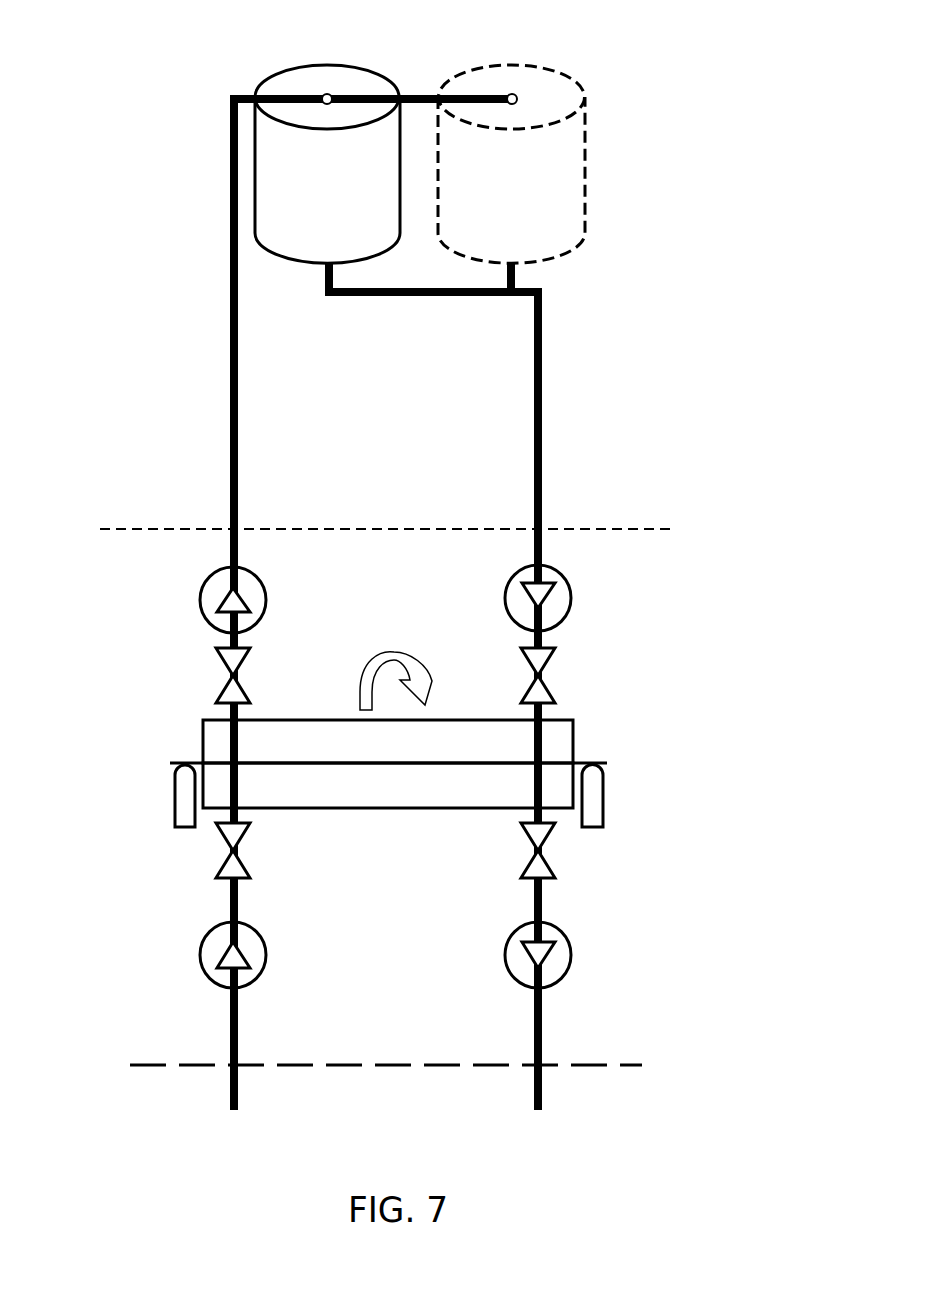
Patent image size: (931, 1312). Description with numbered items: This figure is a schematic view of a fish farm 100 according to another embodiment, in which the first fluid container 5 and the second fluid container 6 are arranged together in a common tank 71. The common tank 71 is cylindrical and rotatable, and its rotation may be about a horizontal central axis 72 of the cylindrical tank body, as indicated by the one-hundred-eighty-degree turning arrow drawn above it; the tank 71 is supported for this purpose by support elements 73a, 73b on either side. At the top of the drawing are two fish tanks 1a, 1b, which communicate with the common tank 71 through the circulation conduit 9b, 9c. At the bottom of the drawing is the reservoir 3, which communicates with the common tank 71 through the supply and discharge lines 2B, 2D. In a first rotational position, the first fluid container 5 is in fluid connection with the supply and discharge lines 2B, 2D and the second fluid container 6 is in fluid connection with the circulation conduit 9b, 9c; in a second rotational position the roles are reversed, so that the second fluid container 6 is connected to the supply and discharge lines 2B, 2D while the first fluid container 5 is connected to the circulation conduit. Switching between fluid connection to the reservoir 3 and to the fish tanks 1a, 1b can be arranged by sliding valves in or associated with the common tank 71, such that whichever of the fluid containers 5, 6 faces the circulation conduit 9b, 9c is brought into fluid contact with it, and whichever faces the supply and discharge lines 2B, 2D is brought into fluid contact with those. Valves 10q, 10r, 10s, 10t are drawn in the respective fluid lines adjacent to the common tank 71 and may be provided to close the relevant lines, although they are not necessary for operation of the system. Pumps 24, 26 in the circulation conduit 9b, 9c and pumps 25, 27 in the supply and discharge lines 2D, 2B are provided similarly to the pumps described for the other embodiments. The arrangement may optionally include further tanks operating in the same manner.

The system 100 is at (672, 65).
The fish tank 1a is at (288, 68).
The fish tank 1b is at (493, 67).
The circulation conduit 9b is at (229, 445).
The circulation conduit 9c is at (542, 372).
The pump 24 is at (208, 580).
The pump 26 is at (571, 600).
The pump 25 is at (206, 940).
The pump 27 is at (571, 960).
The valve 10q is at (243, 688).
The valve 10r is at (547, 688).
The valve 10s is at (243, 863).
The valve 10t is at (543, 855).
The first fluid container 5 is at (393, 760).
The second fluid container 6 is at (393, 801).
The horizontal central axis 72 is at (147, 756).
The common tank 71 is at (637, 745).
The support element 73a is at (172, 795).
The support element 73b is at (607, 798).
The supply and discharge line 2D is at (229, 1045).
The supply and discharge line 2B is at (543, 1018).
The reservoir 3 is at (400, 1136).